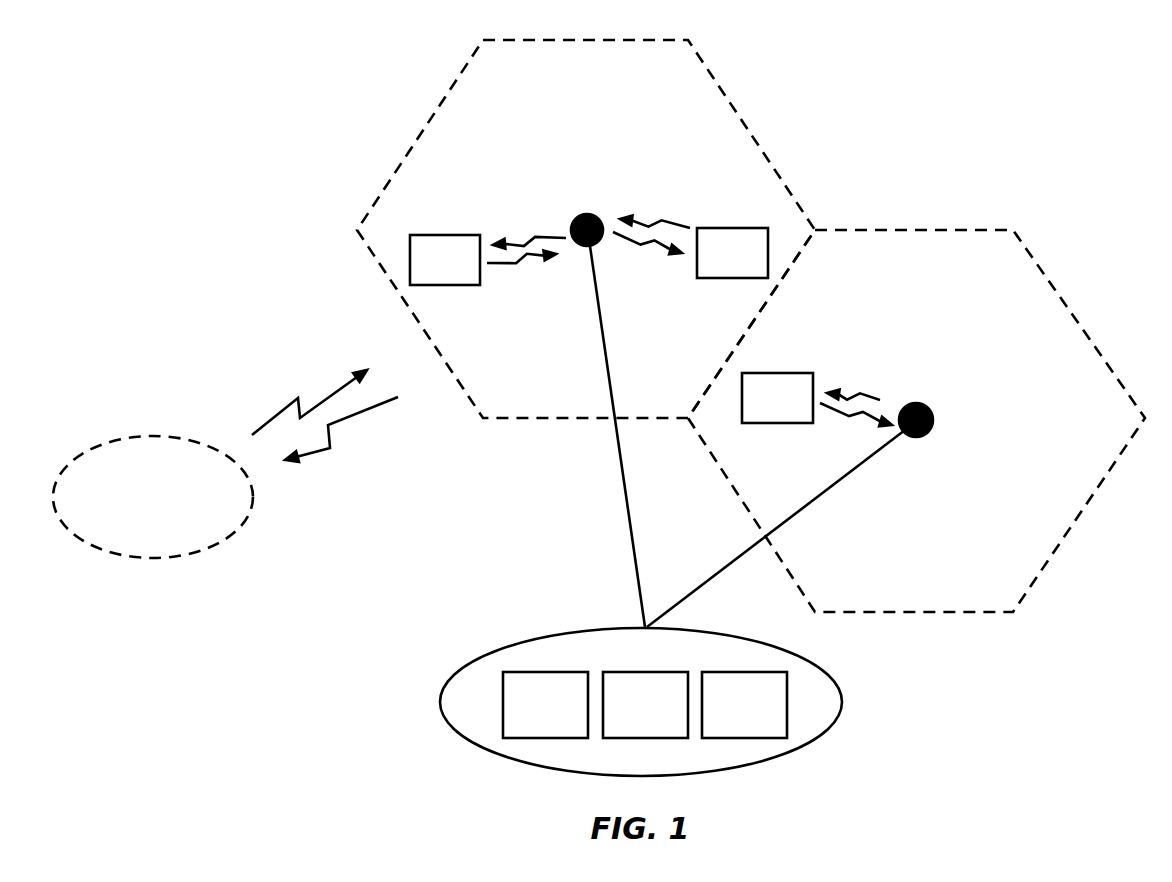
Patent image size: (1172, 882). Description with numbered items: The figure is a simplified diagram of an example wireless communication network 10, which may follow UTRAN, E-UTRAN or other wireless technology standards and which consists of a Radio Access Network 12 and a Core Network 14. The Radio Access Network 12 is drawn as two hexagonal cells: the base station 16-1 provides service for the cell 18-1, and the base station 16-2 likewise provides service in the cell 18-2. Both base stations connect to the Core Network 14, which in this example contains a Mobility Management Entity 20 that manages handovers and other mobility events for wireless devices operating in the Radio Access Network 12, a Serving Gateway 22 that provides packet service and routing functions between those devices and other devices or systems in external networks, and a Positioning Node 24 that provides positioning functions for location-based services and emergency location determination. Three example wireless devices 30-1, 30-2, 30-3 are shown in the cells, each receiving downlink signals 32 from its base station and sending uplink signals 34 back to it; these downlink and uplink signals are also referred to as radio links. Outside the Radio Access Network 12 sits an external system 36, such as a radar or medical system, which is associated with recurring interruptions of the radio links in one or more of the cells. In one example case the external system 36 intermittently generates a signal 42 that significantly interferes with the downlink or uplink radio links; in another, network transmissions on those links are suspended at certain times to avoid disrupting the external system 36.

The wireless communication network 10 is at (990, 142).
The Radio Access Network 12 is at (535, 463).
The Core Network 14 is at (483, 652).
The base station 16-1 is at (932, 408).
The base station 16-2 is at (578, 215).
The cell 18-1 is at (1072, 308).
The cell 18-2 is at (748, 130).
The Mobility Management Entity 20 is at (533, 729).
The Serving Gateway 22 is at (633, 729).
The Positioning Node 24 is at (732, 729).
The wireless device 30-1 is at (756, 409).
The wireless device 30-2 is at (711, 264).
The wireless device 30-3 is at (424, 271).
The downlink signals 32 is at (533, 236).
The uplink signals 34 is at (524, 263).
The external system 36 is at (141, 534).
The signal 42 is at (309, 402).